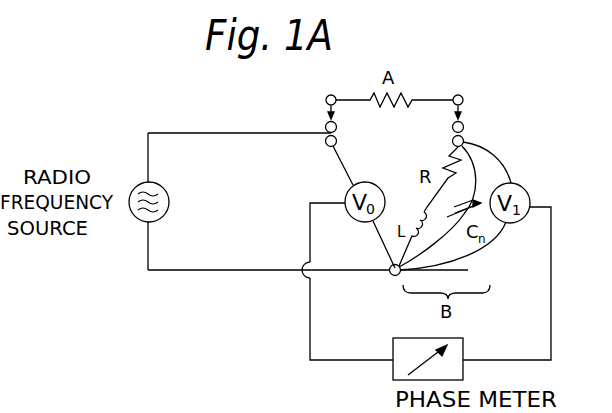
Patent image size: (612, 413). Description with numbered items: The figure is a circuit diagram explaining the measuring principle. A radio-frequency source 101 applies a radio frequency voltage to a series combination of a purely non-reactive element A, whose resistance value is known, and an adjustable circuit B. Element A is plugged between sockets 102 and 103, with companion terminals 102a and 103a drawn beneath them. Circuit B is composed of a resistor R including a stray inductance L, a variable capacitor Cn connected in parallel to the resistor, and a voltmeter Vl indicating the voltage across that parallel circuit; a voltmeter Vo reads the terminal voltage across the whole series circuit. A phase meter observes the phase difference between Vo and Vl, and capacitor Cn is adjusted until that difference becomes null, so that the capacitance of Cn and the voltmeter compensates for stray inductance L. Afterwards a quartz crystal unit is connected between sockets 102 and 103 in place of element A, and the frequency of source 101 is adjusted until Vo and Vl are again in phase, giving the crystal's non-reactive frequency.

The radio-frequency source 101 is at (167, 211).
The socket 102 is at (337, 126).
The terminal 102a is at (336, 144).
The socket 103 is at (452, 126).
The terminal 103a is at (452, 142).